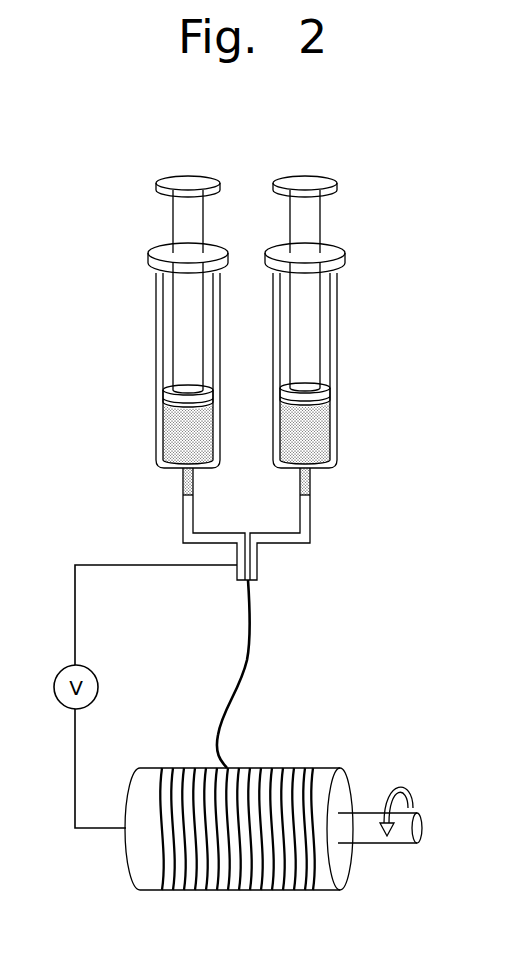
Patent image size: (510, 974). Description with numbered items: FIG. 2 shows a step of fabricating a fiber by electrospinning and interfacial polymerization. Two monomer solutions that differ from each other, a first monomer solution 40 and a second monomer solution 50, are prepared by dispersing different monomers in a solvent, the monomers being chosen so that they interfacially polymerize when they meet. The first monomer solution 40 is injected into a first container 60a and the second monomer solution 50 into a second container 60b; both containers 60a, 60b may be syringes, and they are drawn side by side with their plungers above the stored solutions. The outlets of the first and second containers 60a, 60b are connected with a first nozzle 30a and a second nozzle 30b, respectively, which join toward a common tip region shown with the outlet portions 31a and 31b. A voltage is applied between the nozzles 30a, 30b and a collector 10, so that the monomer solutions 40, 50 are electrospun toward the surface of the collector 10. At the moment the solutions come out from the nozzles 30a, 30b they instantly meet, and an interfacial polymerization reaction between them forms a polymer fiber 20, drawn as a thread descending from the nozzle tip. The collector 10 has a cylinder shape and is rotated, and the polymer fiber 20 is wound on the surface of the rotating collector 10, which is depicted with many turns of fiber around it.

The collector 10 is at (330, 768).
The polymer fiber 20 is at (249, 660).
The first nozzle 30a is at (310, 527).
The second nozzle 30b is at (183, 527).
The first nozzle outlet 31a is at (257, 575).
The second nozzle outlet 31b is at (237, 573).
The first monomer solution 40 is at (320, 423).
The second monomer solution 50 is at (173, 423).
The first container 60a is at (337, 323).
The second container 60b is at (156, 323).